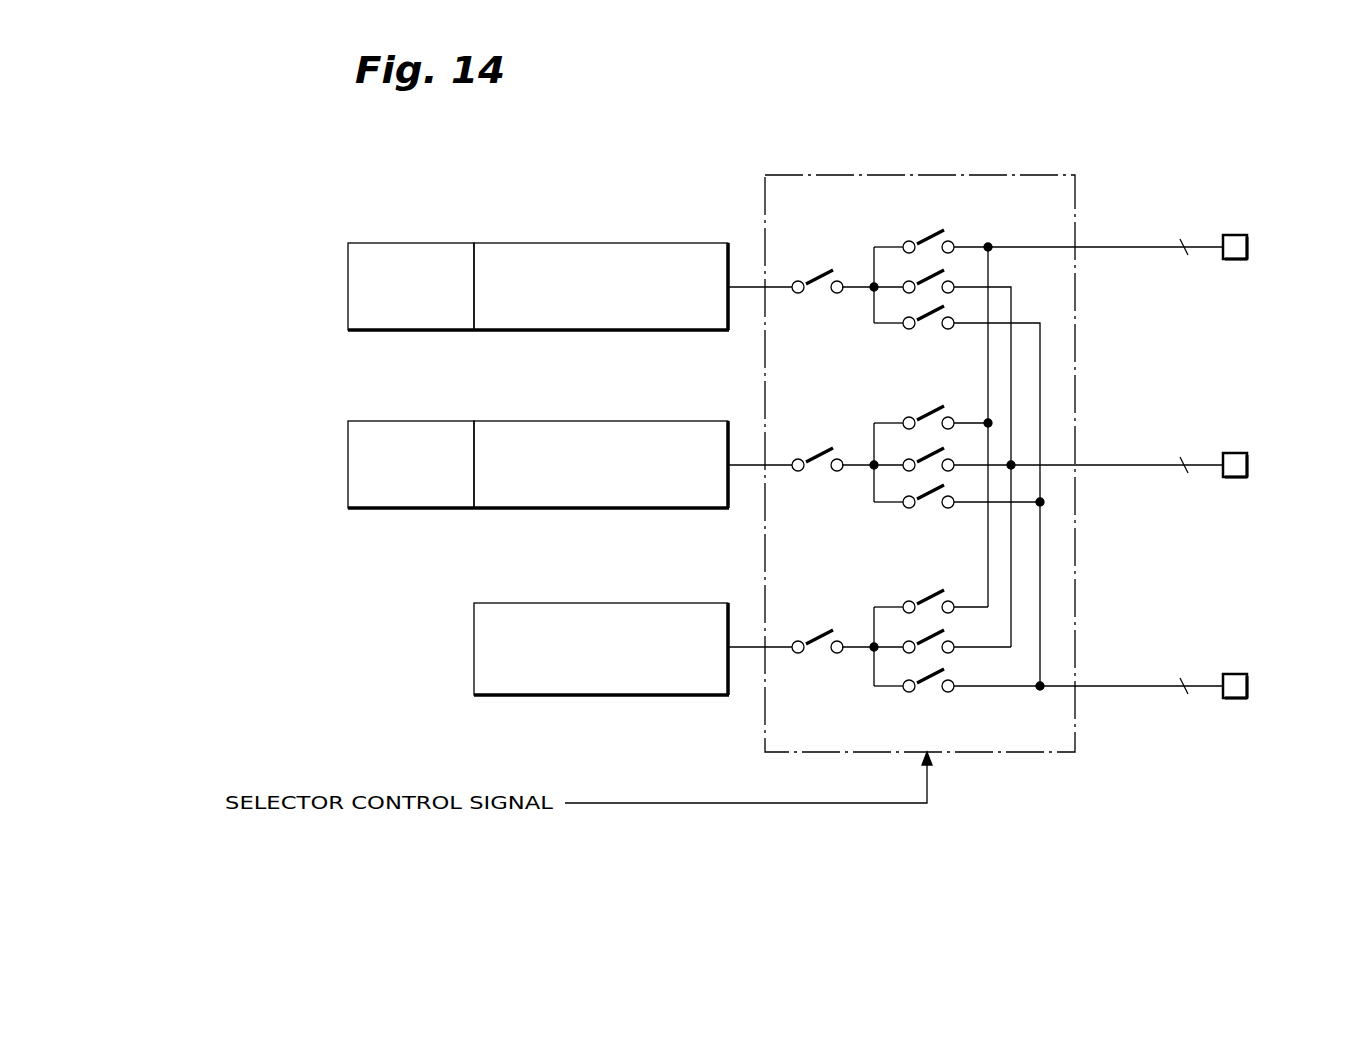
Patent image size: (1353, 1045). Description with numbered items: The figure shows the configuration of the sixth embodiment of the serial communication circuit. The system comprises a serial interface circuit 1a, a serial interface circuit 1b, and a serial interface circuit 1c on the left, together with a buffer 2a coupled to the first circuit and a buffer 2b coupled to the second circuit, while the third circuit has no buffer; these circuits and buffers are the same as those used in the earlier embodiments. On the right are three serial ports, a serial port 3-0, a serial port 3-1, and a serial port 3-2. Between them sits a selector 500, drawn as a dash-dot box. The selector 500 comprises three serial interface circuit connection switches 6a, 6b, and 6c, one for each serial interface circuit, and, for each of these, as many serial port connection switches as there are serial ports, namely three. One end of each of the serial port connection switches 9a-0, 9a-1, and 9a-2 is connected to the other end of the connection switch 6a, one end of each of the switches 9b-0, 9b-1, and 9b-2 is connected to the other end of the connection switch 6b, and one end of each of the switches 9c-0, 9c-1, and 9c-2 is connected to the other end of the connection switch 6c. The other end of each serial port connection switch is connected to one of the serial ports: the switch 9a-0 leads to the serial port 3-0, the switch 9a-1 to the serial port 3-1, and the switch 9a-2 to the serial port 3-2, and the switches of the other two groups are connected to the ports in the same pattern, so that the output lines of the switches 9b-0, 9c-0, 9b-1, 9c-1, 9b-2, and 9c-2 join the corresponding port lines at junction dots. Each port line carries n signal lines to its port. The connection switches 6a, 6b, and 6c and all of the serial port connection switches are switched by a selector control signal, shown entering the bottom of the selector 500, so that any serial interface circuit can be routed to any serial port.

The serial interface circuit 1a is at (650, 243).
The serial interface circuit 1b is at (650, 421).
The serial interface circuit 1c is at (655, 603).
The buffer 2a is at (405, 243).
The buffer 2b is at (405, 421).
The serial port 3-0 is at (1240, 235).
The serial port 3-1 is at (1240, 453).
The serial port 3-2 is at (1240, 674).
The selector 500 is at (845, 175).
The serial interface circuit connection switch 6a is at (812, 276).
The serial interface circuit connection switch 6b is at (810, 455).
The serial interface circuit connection switch 6c is at (814, 636).
The serial port connection switch 9a-0 is at (927, 241).
The serial port connection switch 9a-1 is at (932, 276).
The serial port connection switch 9a-2 is at (927, 327).
The serial port connection switch 9b-0 is at (921, 418).
The serial port connection switch 9b-1 is at (927, 448).
The serial port connection switch 9b-2 is at (926, 506).
The serial port connection switch 9c-0 is at (930, 600).
The serial port connection switch 9c-1 is at (930, 630).
The serial port connection switch 9c-2 is at (922, 690).